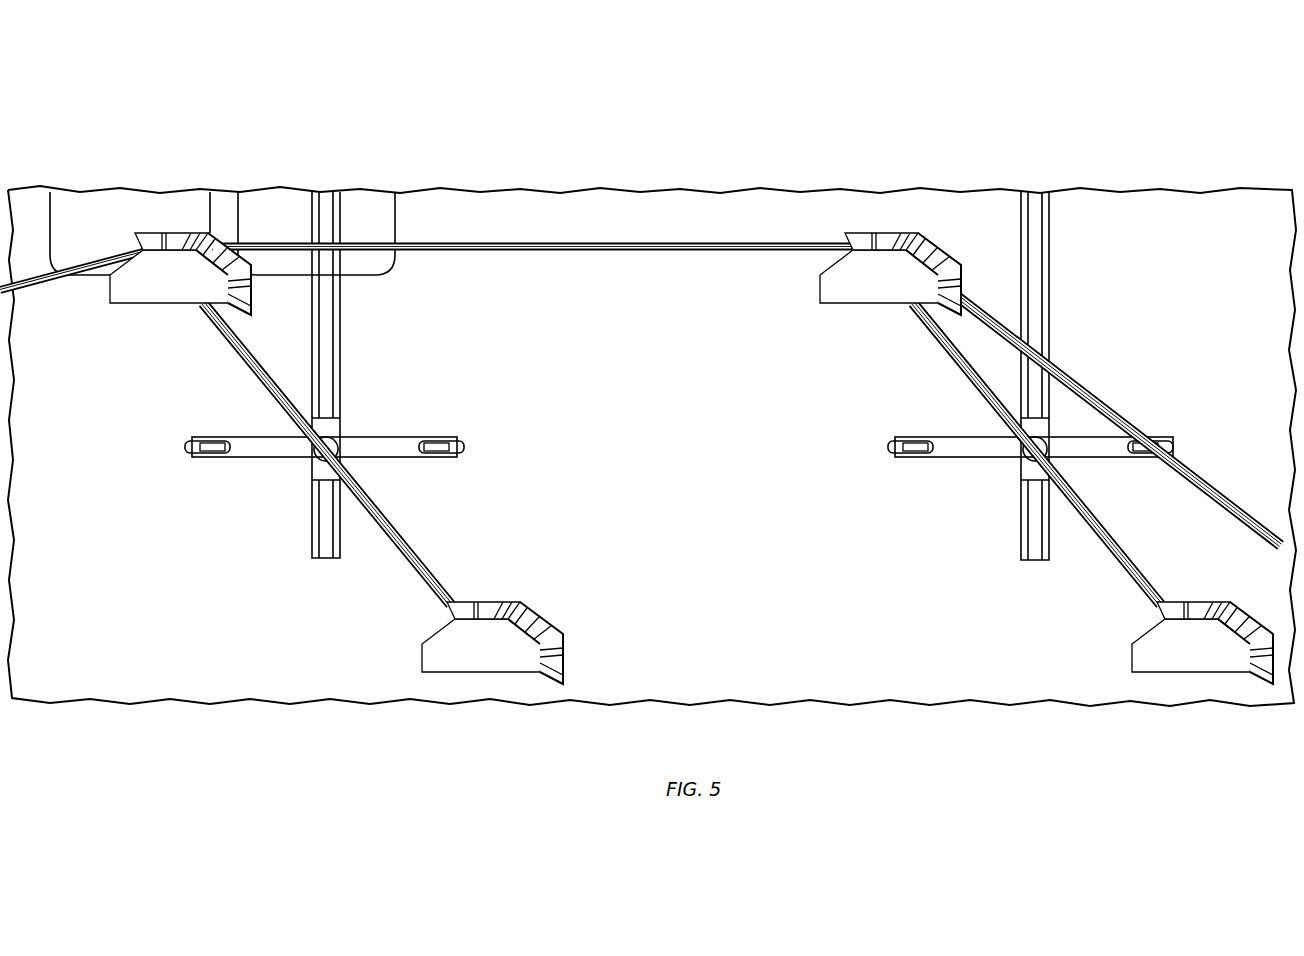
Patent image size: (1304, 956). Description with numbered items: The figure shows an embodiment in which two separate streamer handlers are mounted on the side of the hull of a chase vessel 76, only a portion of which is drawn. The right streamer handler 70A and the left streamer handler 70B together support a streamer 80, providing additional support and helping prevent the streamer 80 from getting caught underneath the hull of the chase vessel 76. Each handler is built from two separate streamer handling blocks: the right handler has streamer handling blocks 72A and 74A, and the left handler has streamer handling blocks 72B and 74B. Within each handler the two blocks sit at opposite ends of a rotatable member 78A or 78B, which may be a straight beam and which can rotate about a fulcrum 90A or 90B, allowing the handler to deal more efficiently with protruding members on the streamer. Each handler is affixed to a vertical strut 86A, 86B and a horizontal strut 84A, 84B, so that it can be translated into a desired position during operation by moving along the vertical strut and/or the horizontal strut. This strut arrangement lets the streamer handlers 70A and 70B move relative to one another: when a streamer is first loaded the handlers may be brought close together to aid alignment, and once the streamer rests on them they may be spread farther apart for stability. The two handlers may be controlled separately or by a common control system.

The right streamer handler 70A is at (1040, 157).
The left streamer handler 70B is at (190, 143).
The streamer handling block 72A is at (850, 305).
The streamer handling block 72B is at (130, 303).
The streamer handling block 74A is at (1132, 650).
The streamer handling block 74B is at (422, 650).
The chase vessel 76 is at (83, 655).
The rotatable member 78A is at (962, 369).
The rotatable member 78B is at (256, 372).
The streamer 80 is at (606, 252).
The horizontal strut 84A is at (960, 457).
The horizontal strut 84B is at (253, 457).
The vertical strut 86A is at (1049, 280).
The vertical strut 86B is at (340, 300).
The fulcrum 90A is at (1024, 466).
The fulcrum 90B is at (340, 438).